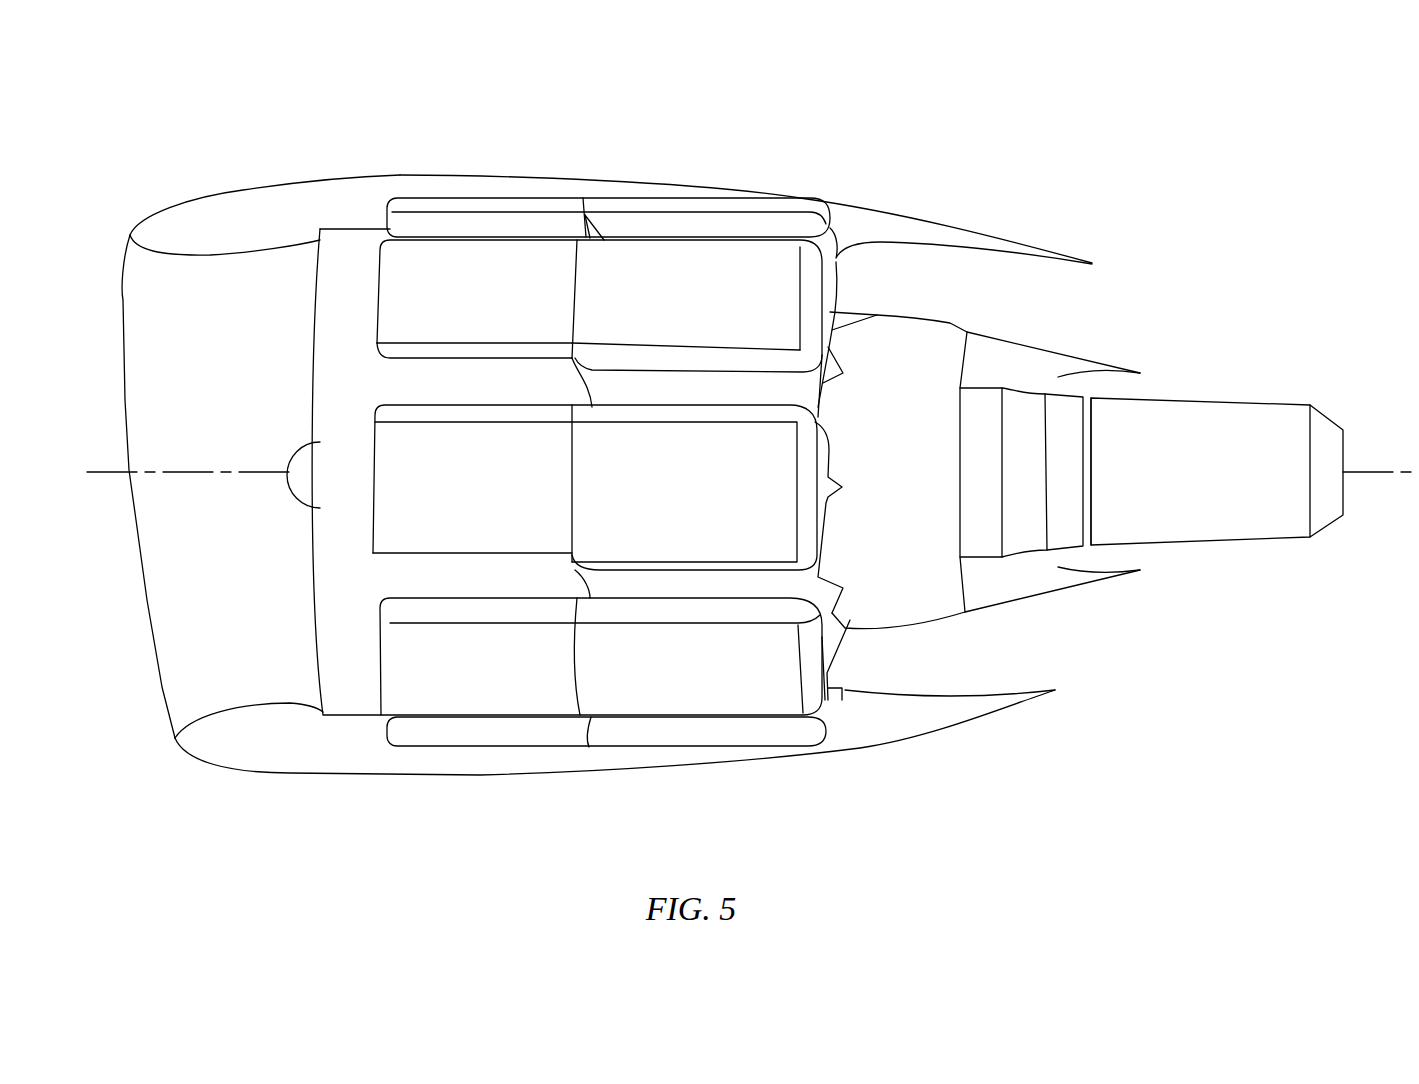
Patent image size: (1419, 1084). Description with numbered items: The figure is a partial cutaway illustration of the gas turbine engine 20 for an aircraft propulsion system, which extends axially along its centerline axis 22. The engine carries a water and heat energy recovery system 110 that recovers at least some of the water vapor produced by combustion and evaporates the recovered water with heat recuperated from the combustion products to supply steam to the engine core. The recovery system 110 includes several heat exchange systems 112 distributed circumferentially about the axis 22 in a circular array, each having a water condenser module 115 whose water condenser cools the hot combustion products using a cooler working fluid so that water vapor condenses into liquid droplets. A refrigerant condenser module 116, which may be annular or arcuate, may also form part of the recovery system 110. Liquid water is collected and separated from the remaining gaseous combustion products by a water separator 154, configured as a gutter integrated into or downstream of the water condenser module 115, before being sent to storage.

The gas turbine engine 20 is at (177, 160).
The centerline axis 22 is at (105, 474).
The water and heat energy recovery system 110 is at (786, 183).
The heat exchange system 112 is at (843, 285).
The water condenser module 115 is at (650, 283).
The refrigerant condenser module 116 is at (950, 323).
The water separator 154 is at (470, 197).